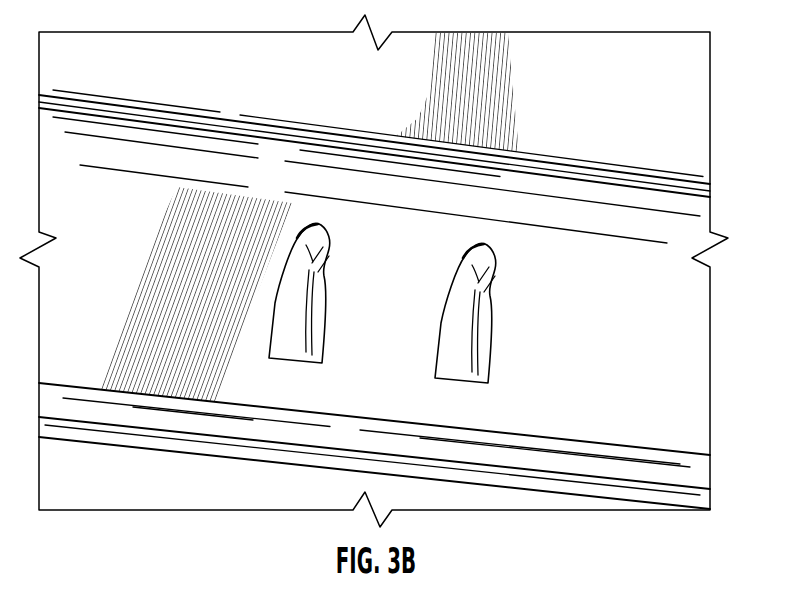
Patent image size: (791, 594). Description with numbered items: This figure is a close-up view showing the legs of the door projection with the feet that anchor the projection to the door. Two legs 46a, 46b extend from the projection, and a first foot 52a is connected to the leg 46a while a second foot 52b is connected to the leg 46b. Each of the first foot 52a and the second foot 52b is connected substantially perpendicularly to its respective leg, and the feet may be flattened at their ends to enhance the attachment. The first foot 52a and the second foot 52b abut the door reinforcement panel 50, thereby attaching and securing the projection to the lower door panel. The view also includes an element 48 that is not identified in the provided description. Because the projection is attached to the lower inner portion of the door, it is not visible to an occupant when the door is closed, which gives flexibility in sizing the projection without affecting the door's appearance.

The upper rail surface 48 is at (666, 122).
The door reinforcement panel 50 is at (628, 338).
The leg 46a is at (320, 272).
The leg 46b is at (492, 287).
The first foot 52a is at (292, 347).
The second foot 52b is at (458, 352).